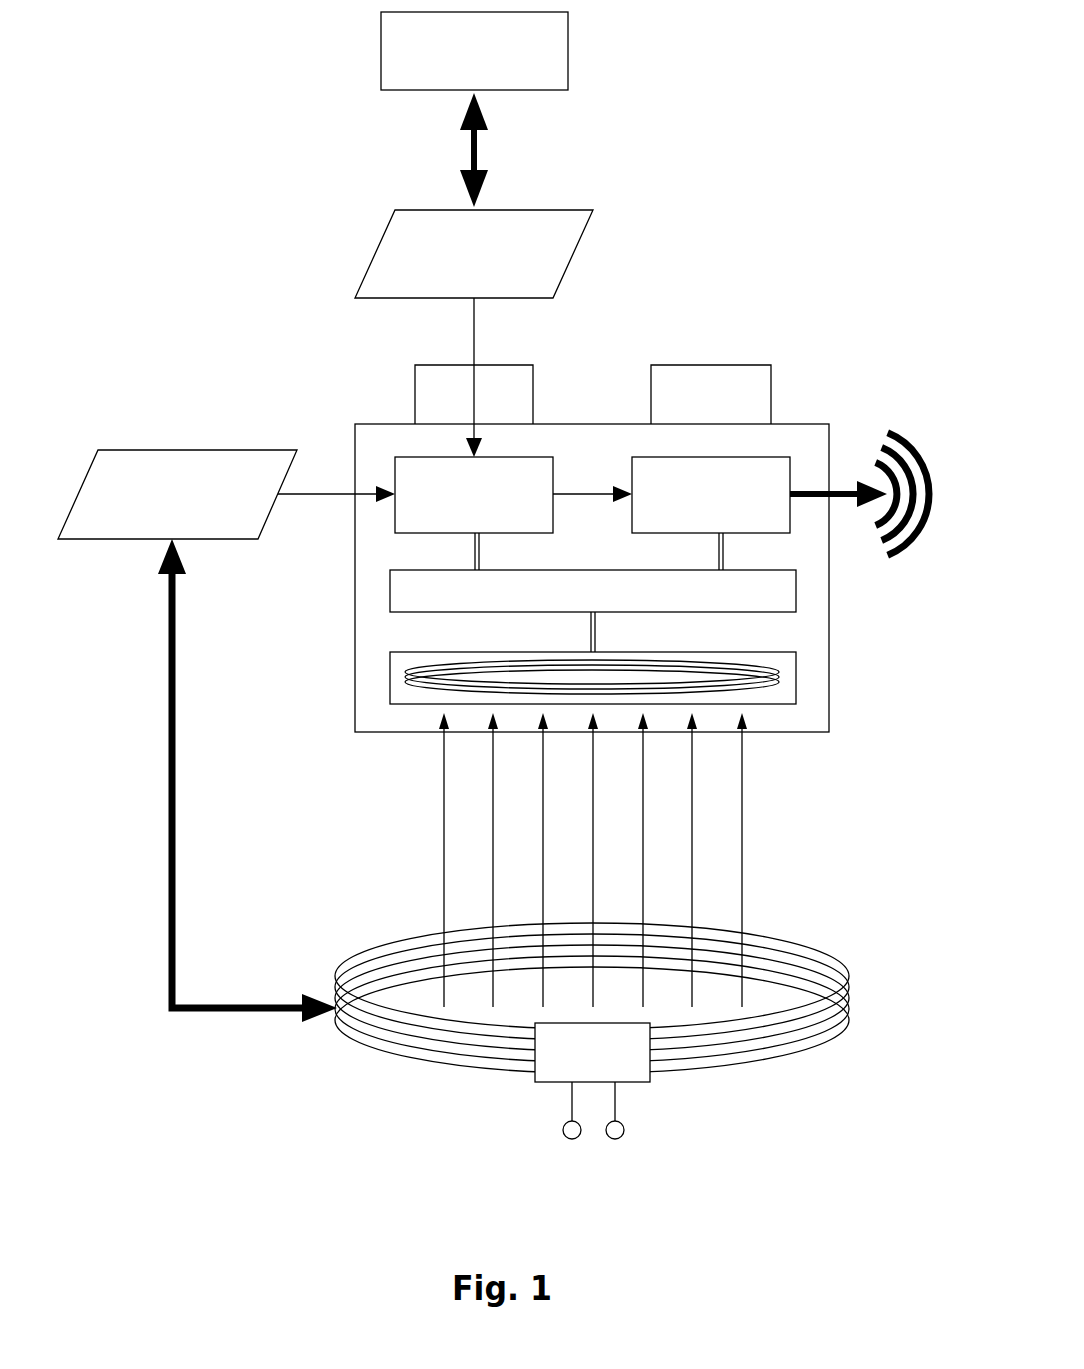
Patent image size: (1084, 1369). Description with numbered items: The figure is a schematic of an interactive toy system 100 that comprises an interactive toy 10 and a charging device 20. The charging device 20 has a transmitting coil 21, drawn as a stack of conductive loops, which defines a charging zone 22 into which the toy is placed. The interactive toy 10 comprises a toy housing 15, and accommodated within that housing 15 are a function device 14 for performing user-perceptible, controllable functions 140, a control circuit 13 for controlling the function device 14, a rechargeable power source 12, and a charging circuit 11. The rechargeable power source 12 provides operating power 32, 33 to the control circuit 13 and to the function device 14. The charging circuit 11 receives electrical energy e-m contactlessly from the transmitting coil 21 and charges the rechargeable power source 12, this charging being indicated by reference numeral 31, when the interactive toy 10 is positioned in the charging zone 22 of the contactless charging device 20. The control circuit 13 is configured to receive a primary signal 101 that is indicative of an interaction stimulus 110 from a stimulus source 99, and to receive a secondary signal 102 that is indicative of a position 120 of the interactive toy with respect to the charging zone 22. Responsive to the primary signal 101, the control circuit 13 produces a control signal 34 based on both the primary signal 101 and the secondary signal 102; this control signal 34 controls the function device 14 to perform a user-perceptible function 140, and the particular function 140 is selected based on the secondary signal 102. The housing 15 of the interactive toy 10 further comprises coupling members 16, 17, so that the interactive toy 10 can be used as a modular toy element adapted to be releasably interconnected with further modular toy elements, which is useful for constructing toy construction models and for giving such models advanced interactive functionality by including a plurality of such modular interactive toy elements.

The interactive toy system 100 is at (86, 100).
The stimulus source 99 is at (474, 51).
The interaction stimulus 110 is at (480, 158).
The primary signal 101 is at (474, 254).
The secondary signal 102 is at (177, 494).
The position 120 is at (177, 845).
The interactive toy 10 is at (590, 424).
The coupling member 16 is at (503, 394).
The control circuit 13 is at (465, 492).
The function device 14 is at (725, 492).
The user-perceptible function 140 is at (836, 480).
The control signal 34 is at (580, 497).
The operating power 32 is at (480, 555).
The operating power 33 is at (724, 555).
The rechargeable power source 12 is at (436, 590).
The charging 31 is at (597, 635).
The charging circuit 11 is at (410, 680).
The toy housing 15 is at (830, 660).
The coupling member 17 is at (410, 742).
The electrical energy em is at (630, 877).
The transmitting coil 21 is at (460, 1048).
The charging zone 22 is at (663, 1003).
The charging device 20 is at (585, 1055).